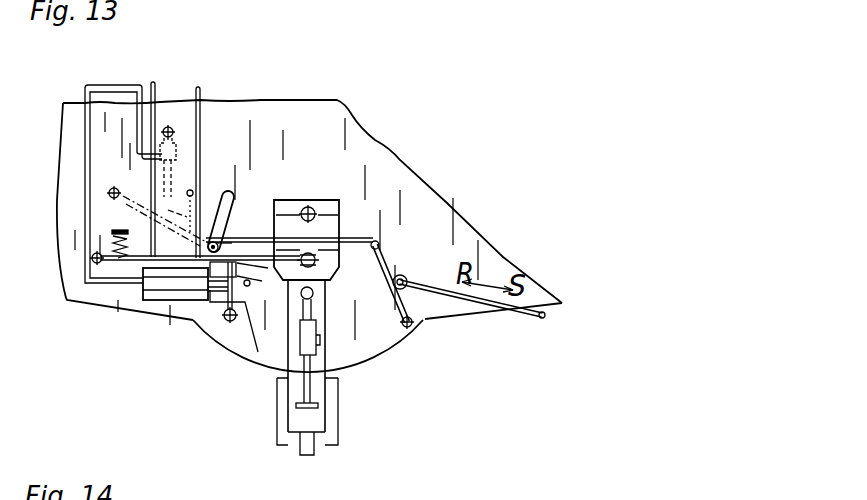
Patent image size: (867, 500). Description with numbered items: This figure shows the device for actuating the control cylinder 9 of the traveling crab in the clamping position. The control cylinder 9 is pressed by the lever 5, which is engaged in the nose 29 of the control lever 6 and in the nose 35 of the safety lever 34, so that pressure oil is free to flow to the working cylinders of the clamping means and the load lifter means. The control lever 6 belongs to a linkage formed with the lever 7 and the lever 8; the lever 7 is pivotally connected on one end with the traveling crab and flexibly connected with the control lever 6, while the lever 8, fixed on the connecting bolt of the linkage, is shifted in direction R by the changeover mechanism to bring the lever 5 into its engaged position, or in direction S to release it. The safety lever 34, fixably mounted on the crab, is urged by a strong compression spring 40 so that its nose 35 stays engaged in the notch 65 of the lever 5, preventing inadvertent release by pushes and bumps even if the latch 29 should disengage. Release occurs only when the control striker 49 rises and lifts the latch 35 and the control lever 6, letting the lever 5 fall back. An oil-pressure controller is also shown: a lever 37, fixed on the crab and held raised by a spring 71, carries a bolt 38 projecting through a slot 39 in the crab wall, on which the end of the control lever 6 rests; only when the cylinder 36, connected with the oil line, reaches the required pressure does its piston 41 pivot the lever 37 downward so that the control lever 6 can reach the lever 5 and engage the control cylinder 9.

The lever 5 is at (242, 268).
The control lever 6 is at (352, 240).
The lever 7 is at (385, 255).
The lever 8 is at (440, 289).
The control cylinder 9 is at (157, 292).
The latch 29 is at (243, 237).
The safety lever 34 is at (175, 258).
The nose 35 is at (245, 256).
The cylinder 36 is at (172, 153).
The lever 37 is at (173, 193).
The bolt 38 is at (213, 228).
The slot 39 is at (231, 193).
The compression spring 40 is at (118, 245).
The piston 41 is at (168, 210).
The control striker 49 is at (308, 380).
The notch 65 is at (265, 268).
The spring 71 is at (187, 217).